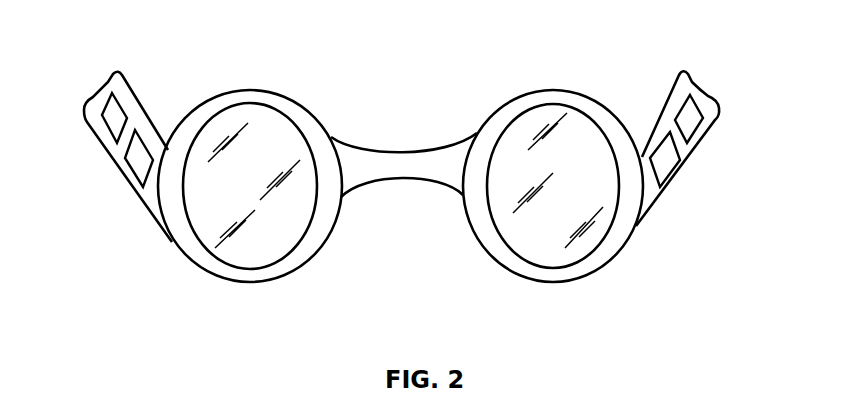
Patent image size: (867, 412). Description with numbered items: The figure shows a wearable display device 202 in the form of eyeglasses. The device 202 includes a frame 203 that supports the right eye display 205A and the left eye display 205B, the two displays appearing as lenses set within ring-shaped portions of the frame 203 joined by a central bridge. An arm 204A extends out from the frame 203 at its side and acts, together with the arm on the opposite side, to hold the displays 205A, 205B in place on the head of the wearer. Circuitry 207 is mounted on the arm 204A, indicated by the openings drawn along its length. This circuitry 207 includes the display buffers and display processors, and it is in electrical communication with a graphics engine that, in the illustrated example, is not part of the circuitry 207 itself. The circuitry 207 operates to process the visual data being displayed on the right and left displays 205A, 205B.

The wearable display device 202 is at (346, 67).
The frame 203 is at (430, 151).
The arm 204A is at (119, 158).
The right eye display 205A is at (233, 252).
The left eye display 205B is at (577, 252).
The circuitry 207 is at (117, 120).